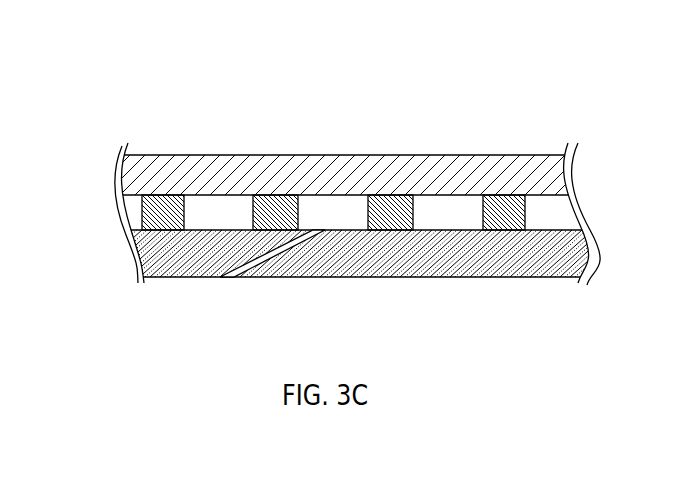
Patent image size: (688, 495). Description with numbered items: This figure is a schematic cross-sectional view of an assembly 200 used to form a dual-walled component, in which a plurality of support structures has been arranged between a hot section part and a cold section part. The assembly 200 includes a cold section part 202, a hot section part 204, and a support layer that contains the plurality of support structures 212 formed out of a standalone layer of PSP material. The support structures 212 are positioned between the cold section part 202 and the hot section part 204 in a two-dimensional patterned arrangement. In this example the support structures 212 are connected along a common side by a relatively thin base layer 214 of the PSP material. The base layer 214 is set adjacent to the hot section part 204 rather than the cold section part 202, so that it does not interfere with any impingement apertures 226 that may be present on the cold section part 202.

The assembly 200 is at (336, 218).
The cold section part 202 is at (397, 253).
The hot section part 204 is at (295, 177).
The support structures 212 is at (280, 212).
The base layer 214 is at (453, 195).
The impingement apertures 226 is at (231, 284).